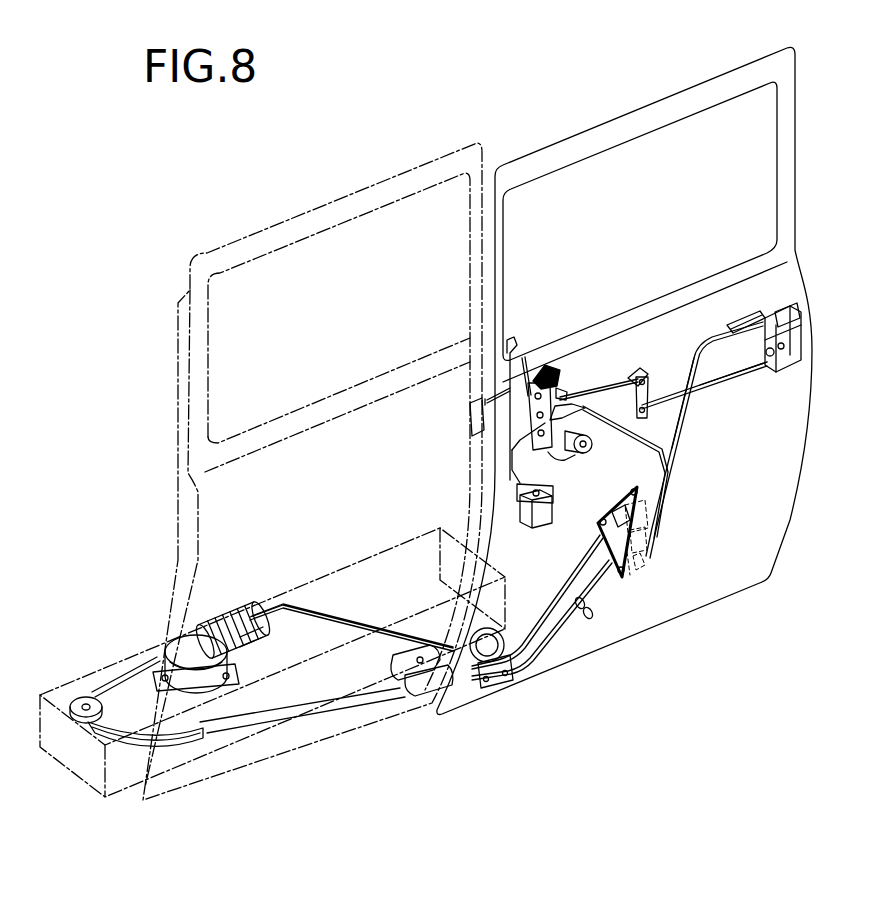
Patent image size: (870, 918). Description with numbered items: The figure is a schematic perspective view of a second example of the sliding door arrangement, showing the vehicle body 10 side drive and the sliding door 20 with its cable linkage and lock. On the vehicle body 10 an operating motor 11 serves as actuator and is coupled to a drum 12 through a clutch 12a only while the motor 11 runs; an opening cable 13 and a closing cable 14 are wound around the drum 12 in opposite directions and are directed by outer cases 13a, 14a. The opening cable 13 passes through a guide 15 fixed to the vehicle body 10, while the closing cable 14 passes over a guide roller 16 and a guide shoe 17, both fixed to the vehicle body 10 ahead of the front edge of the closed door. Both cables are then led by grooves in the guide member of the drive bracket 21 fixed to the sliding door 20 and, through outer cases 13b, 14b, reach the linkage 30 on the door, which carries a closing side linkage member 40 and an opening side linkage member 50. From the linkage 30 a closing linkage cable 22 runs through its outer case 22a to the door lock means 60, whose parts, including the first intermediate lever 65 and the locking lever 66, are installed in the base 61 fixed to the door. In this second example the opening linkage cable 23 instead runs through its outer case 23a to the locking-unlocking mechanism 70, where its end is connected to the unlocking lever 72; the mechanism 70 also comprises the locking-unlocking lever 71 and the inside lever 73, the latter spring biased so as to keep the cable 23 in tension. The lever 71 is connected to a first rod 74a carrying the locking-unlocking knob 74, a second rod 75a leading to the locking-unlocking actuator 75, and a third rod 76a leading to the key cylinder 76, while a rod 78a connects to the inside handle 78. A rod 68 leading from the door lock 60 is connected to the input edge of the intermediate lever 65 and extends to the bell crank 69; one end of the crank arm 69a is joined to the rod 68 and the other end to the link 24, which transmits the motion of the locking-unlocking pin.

The vehicle body 10 is at (388, 545).
The operating motor 11 is at (237, 610).
The drum 12 is at (197, 640).
The clutch 12a is at (240, 687).
The opening cable 13 is at (437, 625).
The outer case 13a is at (328, 607).
The outer case 13b is at (565, 627).
The closing cable 14 is at (275, 705).
The outer case 14a is at (125, 668).
The outer case 14b is at (558, 583).
The guide 15 is at (490, 607).
The guide roller 16 is at (102, 703).
The guide shoe 17 is at (193, 722).
The sliding door 20 is at (536, 160).
The drive bracket 21 is at (422, 693).
The closing linkage cable 22 is at (753, 308).
The outer case 22a is at (681, 427).
The opening linkage cable 23 is at (570, 390).
The outer case 23a is at (632, 432).
The link 24 is at (634, 380).
The linkage 30 is at (653, 575).
The closing side linkage member 40 is at (600, 517).
The opening side linkage member 50 is at (652, 570).
The door lock means 60 is at (788, 403).
The base 61 is at (801, 352).
The first intermediate lever 65 is at (760, 347).
The locking lever 66 is at (783, 310).
The rod 68 is at (736, 380).
The bell crank 69 is at (656, 382).
The crank arm 69a is at (684, 400).
The locking-unlocking mechanism 70 is at (608, 372).
The locking-unlocking lever 71 is at (513, 443).
The unlocking lever 72 is at (547, 423).
The inside lever 73 is at (568, 362).
The locking-unlocking knob 74 is at (512, 342).
The first rod 74a is at (487, 400).
The locking-unlocking actuator 75 is at (542, 517).
The second rod 75a is at (510, 483).
The key cylinder 76 is at (574, 447).
The third rod 76a is at (553, 488).
The inside handle 78 is at (472, 415).
The rod 78a is at (527, 357).